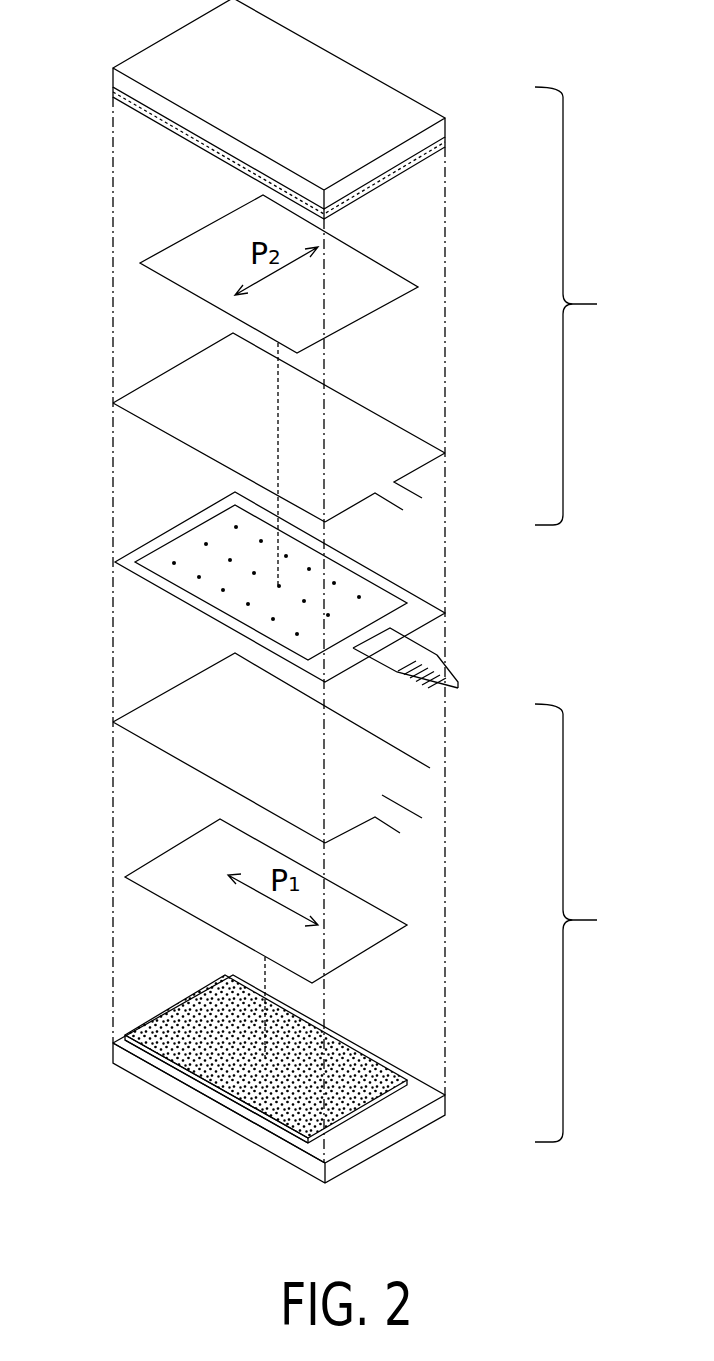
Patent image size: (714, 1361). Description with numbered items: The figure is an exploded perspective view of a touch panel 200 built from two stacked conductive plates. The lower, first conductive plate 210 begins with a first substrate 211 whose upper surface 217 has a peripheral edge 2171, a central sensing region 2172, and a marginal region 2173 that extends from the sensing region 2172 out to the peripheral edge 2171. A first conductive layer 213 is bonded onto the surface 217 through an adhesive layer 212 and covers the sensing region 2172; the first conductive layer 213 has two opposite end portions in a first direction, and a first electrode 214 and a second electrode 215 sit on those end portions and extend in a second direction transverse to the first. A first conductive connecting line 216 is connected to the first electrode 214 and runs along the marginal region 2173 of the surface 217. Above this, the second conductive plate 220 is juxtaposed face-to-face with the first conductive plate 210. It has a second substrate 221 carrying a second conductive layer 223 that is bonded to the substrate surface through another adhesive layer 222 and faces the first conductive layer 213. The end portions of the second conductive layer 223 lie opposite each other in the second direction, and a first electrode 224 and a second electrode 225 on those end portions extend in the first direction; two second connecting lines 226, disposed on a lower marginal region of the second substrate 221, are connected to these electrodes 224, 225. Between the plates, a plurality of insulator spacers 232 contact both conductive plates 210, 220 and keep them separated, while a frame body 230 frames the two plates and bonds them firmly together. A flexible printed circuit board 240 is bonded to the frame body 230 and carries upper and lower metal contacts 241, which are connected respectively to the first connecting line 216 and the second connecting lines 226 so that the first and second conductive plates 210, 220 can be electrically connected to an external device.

The touch panel 200 is at (518, 45).
The first conductive plate 210 is at (587, 923).
The first substrate 211 is at (415, 1120).
The adhesive layer 212 is at (307, 1114).
The first conductive layer 213 is at (377, 920).
The first electrode 214 is at (197, 673).
The second electrode 215 is at (410, 772).
The first conductive connecting line 216 is at (150, 746).
The surface 217 is at (426, 1079).
The peripheral edge 2171 is at (200, 1098).
The sensing region 2172 is at (273, 1079).
The marginal region 2173 is at (182, 1079).
The second conductive plate 220 is at (588, 306).
The second substrate 221 is at (388, 100).
The adhesive layer 222 is at (432, 148).
The second conductive layer 223 is at (383, 280).
The first electrode 224 is at (150, 420).
The second electrode 225 is at (422, 438).
The second connecting lines 226 is at (420, 472).
The frame body 230 is at (353, 560).
The insulator spacers 232 is at (358, 596).
The flexible printed circuit board 240 is at (456, 692).
The upper and lower metal contacts 241 is at (435, 653).